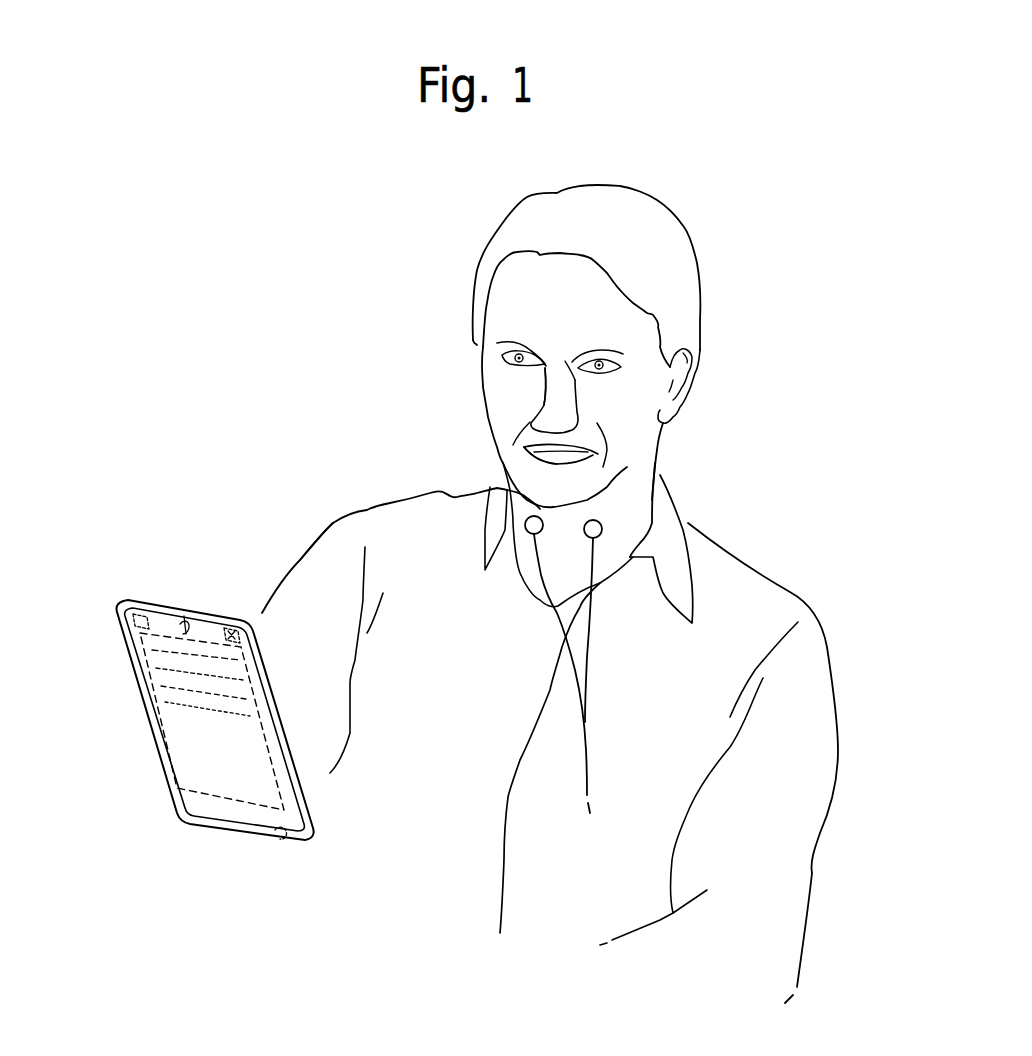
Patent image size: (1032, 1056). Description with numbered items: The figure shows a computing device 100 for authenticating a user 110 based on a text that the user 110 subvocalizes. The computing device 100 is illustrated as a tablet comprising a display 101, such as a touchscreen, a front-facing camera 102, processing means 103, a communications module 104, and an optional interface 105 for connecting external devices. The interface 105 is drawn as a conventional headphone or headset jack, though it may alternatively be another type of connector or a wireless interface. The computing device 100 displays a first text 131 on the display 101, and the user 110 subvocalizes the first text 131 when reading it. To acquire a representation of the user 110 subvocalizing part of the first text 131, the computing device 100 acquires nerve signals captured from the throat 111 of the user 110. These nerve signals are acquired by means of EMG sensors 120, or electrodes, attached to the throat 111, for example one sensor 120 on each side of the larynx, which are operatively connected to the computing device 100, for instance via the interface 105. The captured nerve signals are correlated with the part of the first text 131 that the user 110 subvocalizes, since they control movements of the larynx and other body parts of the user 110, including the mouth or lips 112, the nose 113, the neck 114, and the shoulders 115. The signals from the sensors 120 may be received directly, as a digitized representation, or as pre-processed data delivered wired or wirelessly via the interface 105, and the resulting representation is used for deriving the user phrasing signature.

The computing device 100 is at (156, 667).
The display 101 is at (207, 750).
The front-facing camera 102 is at (175, 608).
The processing means 103 is at (223, 622).
The communications module 104 is at (128, 600).
The interface 105 is at (282, 848).
The user 110 is at (813, 511).
The throat 111 is at (562, 541).
The mouth or lips 112 is at (521, 457).
The nose 113 is at (547, 404).
The neck 114 is at (647, 490).
The shoulders 115 is at (390, 503).
The EMG sensors 120 is at (524, 531).
The first text 131 is at (190, 697).